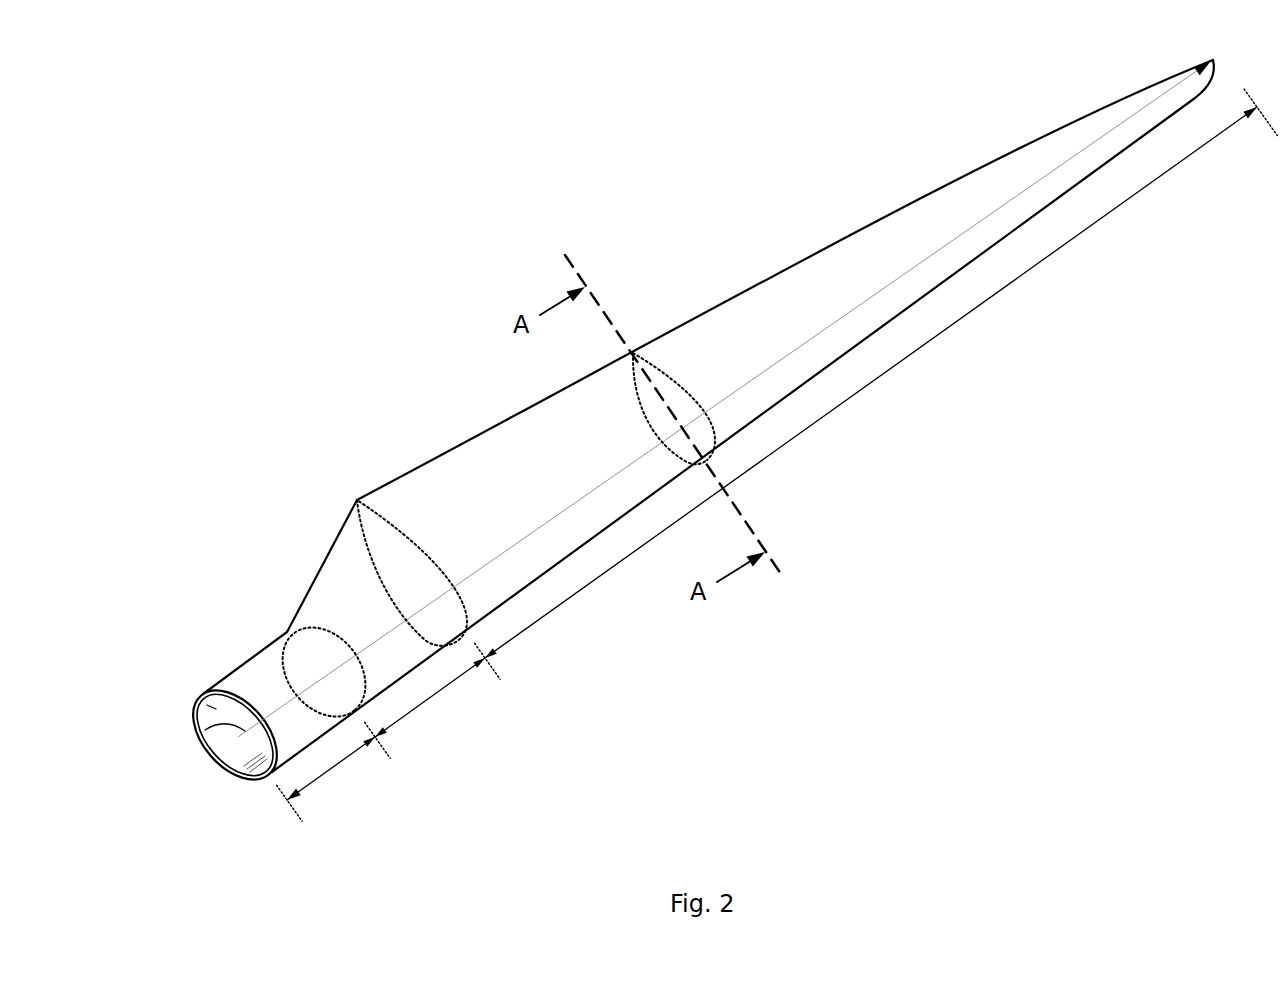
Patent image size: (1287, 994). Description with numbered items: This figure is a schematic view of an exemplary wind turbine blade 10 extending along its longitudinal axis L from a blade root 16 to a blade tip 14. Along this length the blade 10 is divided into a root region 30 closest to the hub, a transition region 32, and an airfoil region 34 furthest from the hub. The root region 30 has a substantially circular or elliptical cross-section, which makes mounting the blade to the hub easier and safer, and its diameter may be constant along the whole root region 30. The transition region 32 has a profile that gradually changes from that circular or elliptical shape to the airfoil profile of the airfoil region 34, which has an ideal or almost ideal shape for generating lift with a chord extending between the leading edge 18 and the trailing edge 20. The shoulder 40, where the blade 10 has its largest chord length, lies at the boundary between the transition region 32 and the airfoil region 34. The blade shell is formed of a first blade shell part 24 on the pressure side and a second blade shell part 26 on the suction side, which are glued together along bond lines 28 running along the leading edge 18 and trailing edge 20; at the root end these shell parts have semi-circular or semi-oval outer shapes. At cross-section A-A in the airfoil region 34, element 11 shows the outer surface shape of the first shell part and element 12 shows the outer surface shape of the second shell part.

The wind turbine blade 10 is at (708, 399).
The first blade shell part in airfoil region 11 is at (673, 387).
The second blade shell part in airfoil region 12 is at (657, 422).
The blade tip 14 is at (1212, 58).
The blade root 16 is at (198, 700).
The leading edge 18 is at (907, 308).
The trailing edge 20 is at (793, 268).
The first blade shell part 24 is at (214, 702).
The second blade shell part 26 is at (224, 778).
The bond lines 28 is at (200, 692).
The root region 30 is at (332, 765).
The transition region 32 is at (432, 697).
The airfoil region 34 is at (793, 438).
The shoulder 40 is at (357, 498).
The longitudinal axis L is at (195, 733).